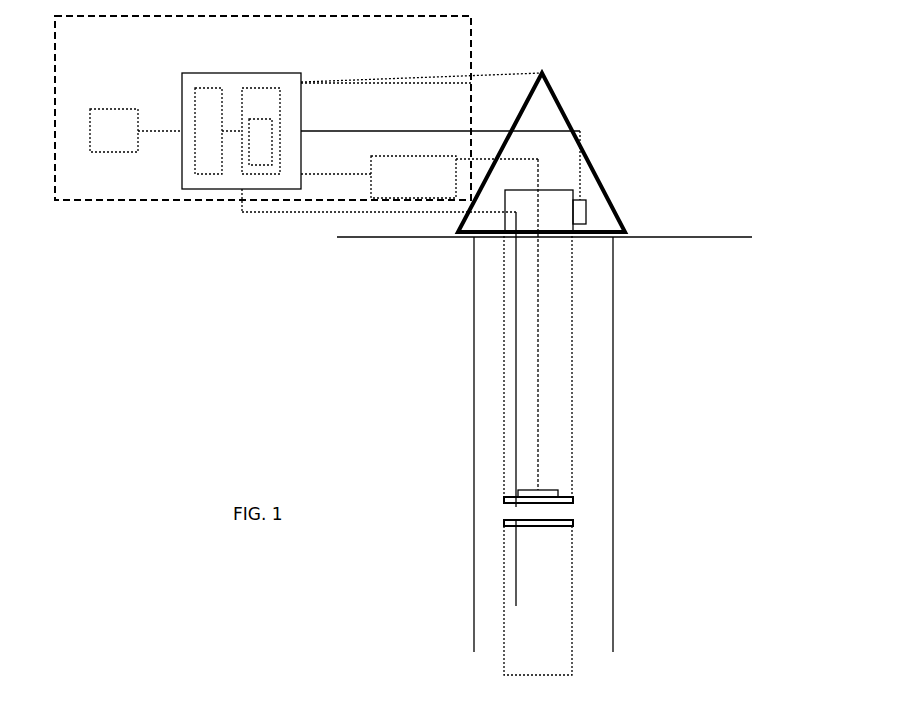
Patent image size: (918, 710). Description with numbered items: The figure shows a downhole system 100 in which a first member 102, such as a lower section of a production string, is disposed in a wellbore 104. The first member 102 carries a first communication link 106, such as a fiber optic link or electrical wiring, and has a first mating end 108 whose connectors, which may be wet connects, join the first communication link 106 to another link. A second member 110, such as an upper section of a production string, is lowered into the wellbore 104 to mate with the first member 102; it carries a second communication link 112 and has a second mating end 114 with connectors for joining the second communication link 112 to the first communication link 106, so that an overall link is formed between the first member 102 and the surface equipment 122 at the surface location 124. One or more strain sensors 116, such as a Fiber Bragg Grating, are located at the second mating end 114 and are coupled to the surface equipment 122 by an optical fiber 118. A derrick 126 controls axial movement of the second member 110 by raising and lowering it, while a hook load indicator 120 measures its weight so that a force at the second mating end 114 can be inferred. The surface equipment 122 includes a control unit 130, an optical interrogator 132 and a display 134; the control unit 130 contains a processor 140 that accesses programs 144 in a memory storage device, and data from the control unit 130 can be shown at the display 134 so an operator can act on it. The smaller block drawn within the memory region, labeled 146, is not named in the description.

The downhole system 100 is at (805, 178).
The first member 102 is at (572, 600).
The wellbore 104 is at (609, 301).
The first communication link 106 is at (516, 570).
The first mating end 108 is at (573, 523).
The second member 110 is at (572, 342).
The second communication link 112 is at (516, 450).
The second mating end 114 is at (573, 500).
The strain sensors 116 is at (560, 493).
The optical fiber 118 is at (538, 345).
The hook load indicator 120 is at (587, 210).
The surface equipment 122 is at (55, 110).
The surface location 124 is at (676, 234).
The derrick 126 is at (565, 112).
The control unit 130 is at (240, 73).
The optical interrogator 132 is at (413, 155).
The display 134 is at (115, 109).
The processor 140 is at (208, 87).
The programs 144 is at (258, 87).
The instructions 146 is at (270, 138).